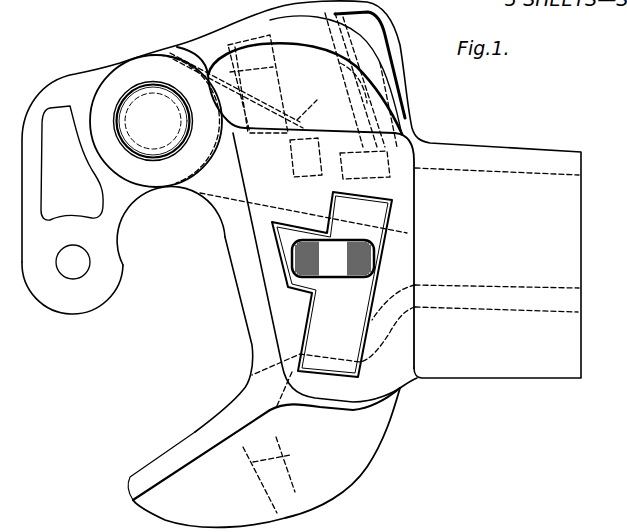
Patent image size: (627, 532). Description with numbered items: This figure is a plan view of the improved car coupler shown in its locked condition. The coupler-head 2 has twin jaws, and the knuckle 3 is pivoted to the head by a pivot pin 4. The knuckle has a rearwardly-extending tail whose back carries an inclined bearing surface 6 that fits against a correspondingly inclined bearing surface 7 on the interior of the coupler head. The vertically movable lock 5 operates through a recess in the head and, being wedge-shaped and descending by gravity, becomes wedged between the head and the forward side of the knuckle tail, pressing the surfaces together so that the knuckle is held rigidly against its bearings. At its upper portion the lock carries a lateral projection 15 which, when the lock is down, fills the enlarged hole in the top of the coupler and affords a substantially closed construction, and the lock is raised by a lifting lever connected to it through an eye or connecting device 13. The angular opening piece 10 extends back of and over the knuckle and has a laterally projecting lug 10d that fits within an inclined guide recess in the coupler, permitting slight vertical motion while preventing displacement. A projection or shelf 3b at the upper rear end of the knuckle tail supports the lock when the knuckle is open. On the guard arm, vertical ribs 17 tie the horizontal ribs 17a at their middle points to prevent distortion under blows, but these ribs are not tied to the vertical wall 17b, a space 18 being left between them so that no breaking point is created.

The coupler-head 2 is at (248, 290).
The knuckle 3 is at (90, 143).
The projection or shelf 3b is at (370, 23).
The pivot pin 4 is at (156, 121).
The vertically movable lock 5 is at (332, 284).
The inclined bearing surface 6 is at (349, 78).
The inclined bearing surface 7 is at (333, 101).
The opening piece 10 is at (238, 47).
The laterally projecting lug 10d is at (308, 149).
The eye or connecting device 13 is at (333, 258).
The lateral projection 15 is at (285, 237).
The vertical ribs 17 is at (308, 502).
The horizontal ribs 17a is at (266, 444).
The vertical wall 17b is at (223, 420).
The space 18 is at (280, 438).